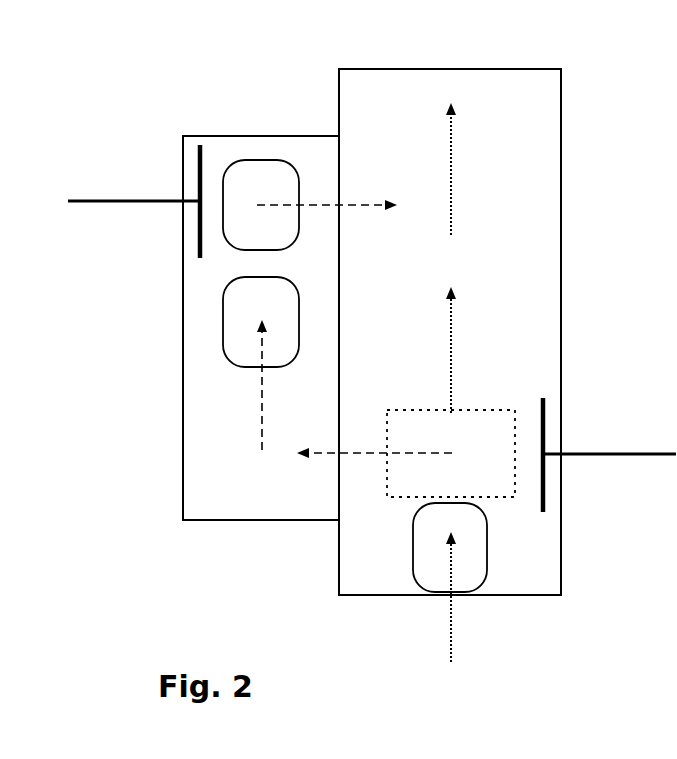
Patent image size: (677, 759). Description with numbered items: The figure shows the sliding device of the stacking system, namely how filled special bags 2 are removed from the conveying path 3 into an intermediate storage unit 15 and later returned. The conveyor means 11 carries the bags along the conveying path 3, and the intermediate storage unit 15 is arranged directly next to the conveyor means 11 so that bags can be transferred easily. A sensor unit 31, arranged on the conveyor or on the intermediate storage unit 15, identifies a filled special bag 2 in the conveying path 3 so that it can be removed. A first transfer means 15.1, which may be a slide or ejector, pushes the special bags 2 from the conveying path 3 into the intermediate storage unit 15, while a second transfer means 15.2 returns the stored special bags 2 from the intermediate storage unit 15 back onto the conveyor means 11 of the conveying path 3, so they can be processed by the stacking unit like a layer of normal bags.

The filled special bag 2 is at (233, 233).
The conveying path 3 is at (451, 152).
The first conveyor means 11 is at (537, 277).
The intermediate storage unit 15 is at (208, 492).
The first transfer means 15.1 is at (583, 453).
The second transfer means 15.2 is at (100, 200).
The sensor unit 31 is at (508, 498).